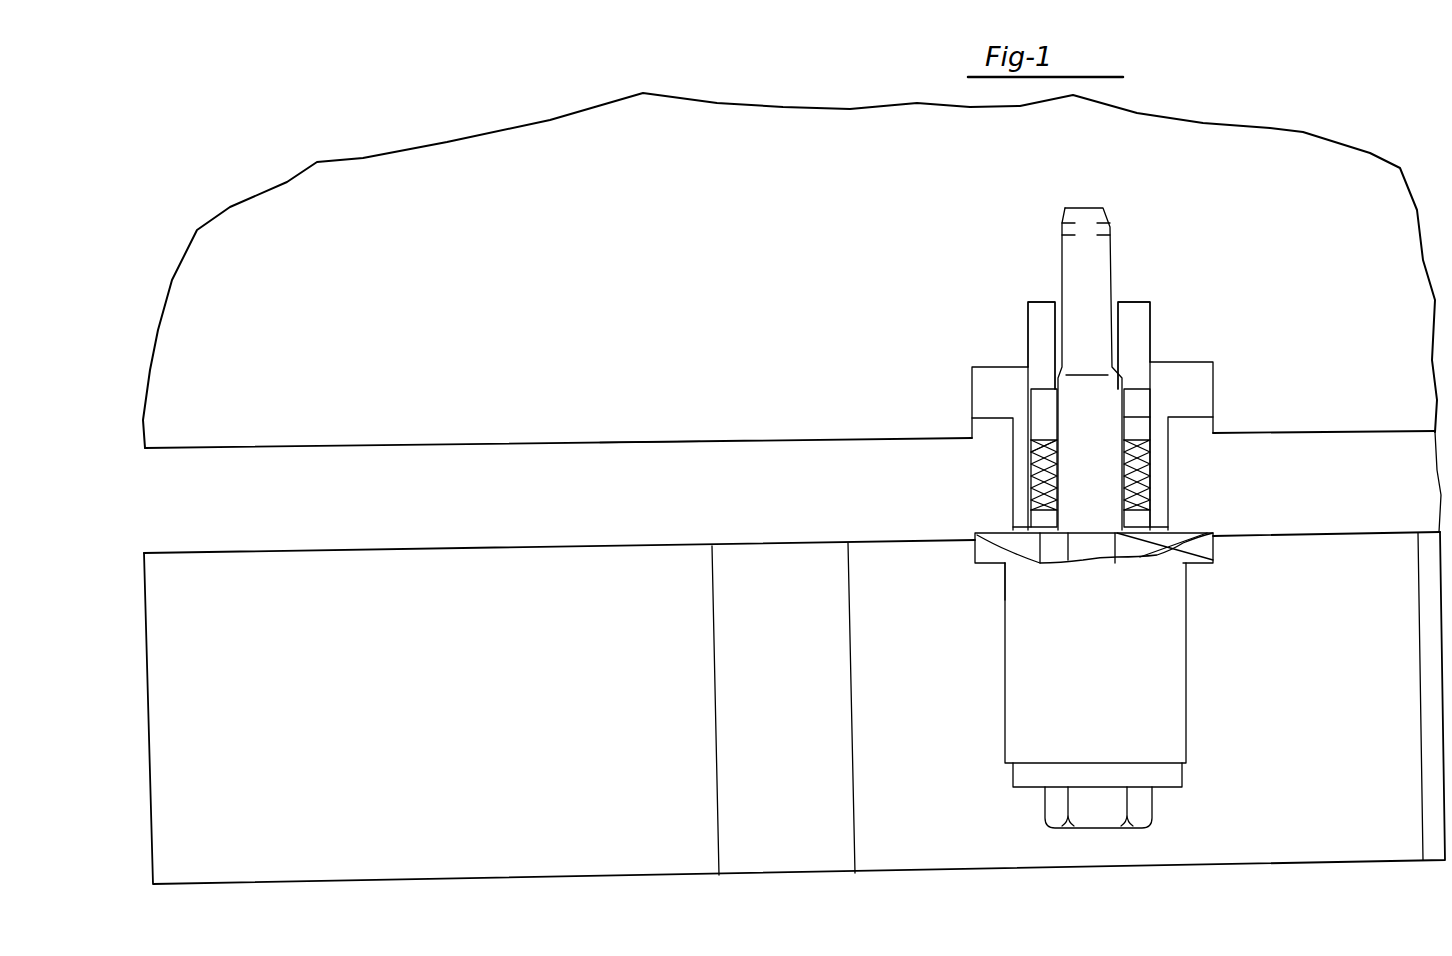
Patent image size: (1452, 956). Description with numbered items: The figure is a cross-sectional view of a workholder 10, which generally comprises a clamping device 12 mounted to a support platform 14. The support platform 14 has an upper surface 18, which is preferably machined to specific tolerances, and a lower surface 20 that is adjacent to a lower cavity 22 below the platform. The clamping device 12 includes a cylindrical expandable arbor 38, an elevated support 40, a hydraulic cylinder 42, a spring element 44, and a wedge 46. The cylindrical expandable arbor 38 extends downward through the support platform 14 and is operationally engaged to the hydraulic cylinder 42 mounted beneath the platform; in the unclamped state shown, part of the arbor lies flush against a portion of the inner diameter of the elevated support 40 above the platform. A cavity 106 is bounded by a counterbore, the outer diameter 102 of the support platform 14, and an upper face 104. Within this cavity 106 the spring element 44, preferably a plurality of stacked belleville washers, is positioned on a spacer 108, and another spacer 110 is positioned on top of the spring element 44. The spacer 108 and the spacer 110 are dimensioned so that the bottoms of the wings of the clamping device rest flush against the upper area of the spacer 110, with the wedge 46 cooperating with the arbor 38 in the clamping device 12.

The workholder 10 is at (675, 335).
The clamping device 12 is at (980, 670).
The support platform 14 is at (763, 462).
The upper surface 18 is at (625, 442).
The lower surface 20 is at (555, 550).
The lower cavity 22 is at (503, 747).
The cylindrical expandable arbor 38 is at (1093, 292).
The elevated support 40 is at (1045, 327).
The hydraulic cylinder 42 is at (1163, 663).
The spring element 44 is at (1137, 453).
The wedge 46 is at (1136, 400).
The outer diameter 102 is at (1013, 520).
The upper face 104 is at (1040, 534).
The cavity 106 is at (1022, 447).
The spacer 108 is at (1140, 520).
The spacer 110 is at (1137, 428).